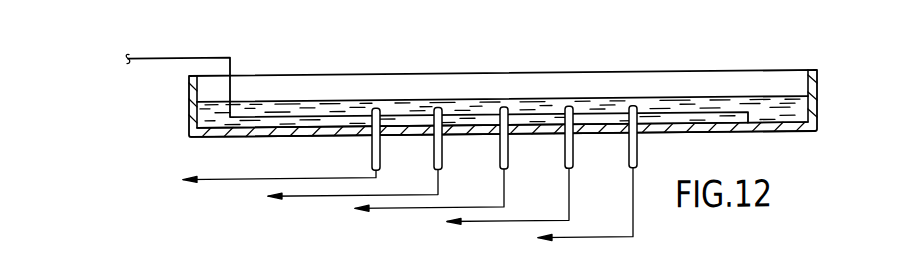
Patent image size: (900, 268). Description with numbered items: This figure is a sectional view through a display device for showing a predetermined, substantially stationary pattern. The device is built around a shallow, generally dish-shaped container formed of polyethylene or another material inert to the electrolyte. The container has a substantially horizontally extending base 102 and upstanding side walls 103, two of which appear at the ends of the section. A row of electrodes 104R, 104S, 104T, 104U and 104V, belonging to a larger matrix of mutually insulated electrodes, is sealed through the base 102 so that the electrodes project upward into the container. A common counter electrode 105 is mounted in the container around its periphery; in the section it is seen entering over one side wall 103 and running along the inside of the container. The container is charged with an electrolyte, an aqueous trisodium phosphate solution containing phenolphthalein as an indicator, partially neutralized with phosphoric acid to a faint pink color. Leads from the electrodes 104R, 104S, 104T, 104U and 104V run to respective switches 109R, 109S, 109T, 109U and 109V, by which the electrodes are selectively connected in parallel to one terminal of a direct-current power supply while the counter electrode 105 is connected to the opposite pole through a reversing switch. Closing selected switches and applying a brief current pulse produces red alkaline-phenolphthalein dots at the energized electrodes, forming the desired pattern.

The base 102 is at (660, 134).
The side wall 103 is at (190, 106).
The electrode 104R is at (376, 106).
The electrode 104S is at (438, 106).
The electrode 104T is at (504, 106).
The electrode 104U is at (569, 106).
The electrode 104V is at (633, 106).
The common counter electrode 105 is at (188, 54).
The switch 109R is at (254, 183).
The switch 109S is at (325, 192).
The switch 109T is at (403, 197).
The switch 109U is at (478, 202).
The switch 109V is at (559, 209).